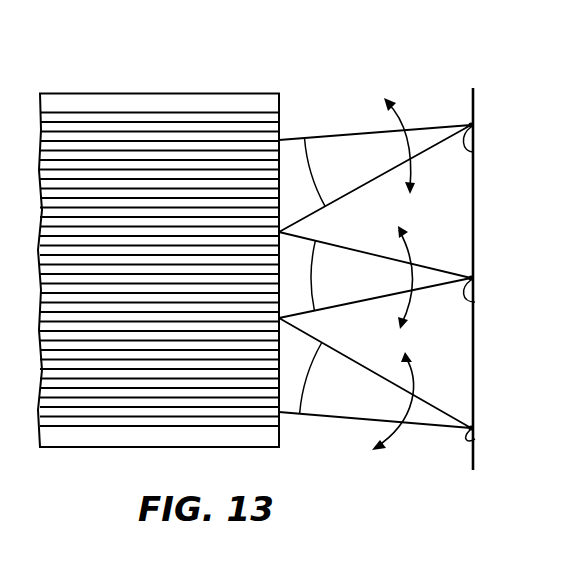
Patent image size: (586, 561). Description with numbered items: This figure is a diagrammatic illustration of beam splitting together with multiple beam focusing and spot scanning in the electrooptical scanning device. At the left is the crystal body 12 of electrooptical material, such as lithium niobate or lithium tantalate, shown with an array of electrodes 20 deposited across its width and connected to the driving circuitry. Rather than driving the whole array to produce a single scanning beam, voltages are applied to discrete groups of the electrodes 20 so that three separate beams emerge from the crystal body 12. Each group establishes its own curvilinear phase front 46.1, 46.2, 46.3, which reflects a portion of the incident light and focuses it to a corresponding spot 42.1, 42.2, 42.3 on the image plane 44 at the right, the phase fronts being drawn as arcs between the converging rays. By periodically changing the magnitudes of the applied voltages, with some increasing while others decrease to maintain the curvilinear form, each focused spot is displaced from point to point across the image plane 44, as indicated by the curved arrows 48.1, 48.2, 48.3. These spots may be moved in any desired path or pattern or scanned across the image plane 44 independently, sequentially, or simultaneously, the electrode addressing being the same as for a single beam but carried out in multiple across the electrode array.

The crystal body 12 is at (108, 93).
The electrodes 20 is at (218, 130).
The image plane 44 is at (474, 108).
The spot 42.1 is at (474, 154).
The spot 42.2 is at (476, 306).
The spot 42.3 is at (476, 436).
The phase front 46.1 is at (312, 181).
The phase front 46.2 is at (305, 280).
The phase front 46.3 is at (307, 372).
The scanning arrow 48.1 is at (404, 118).
The scanning arrow 48.2 is at (412, 254).
The scanning arrow 48.3 is at (412, 375).